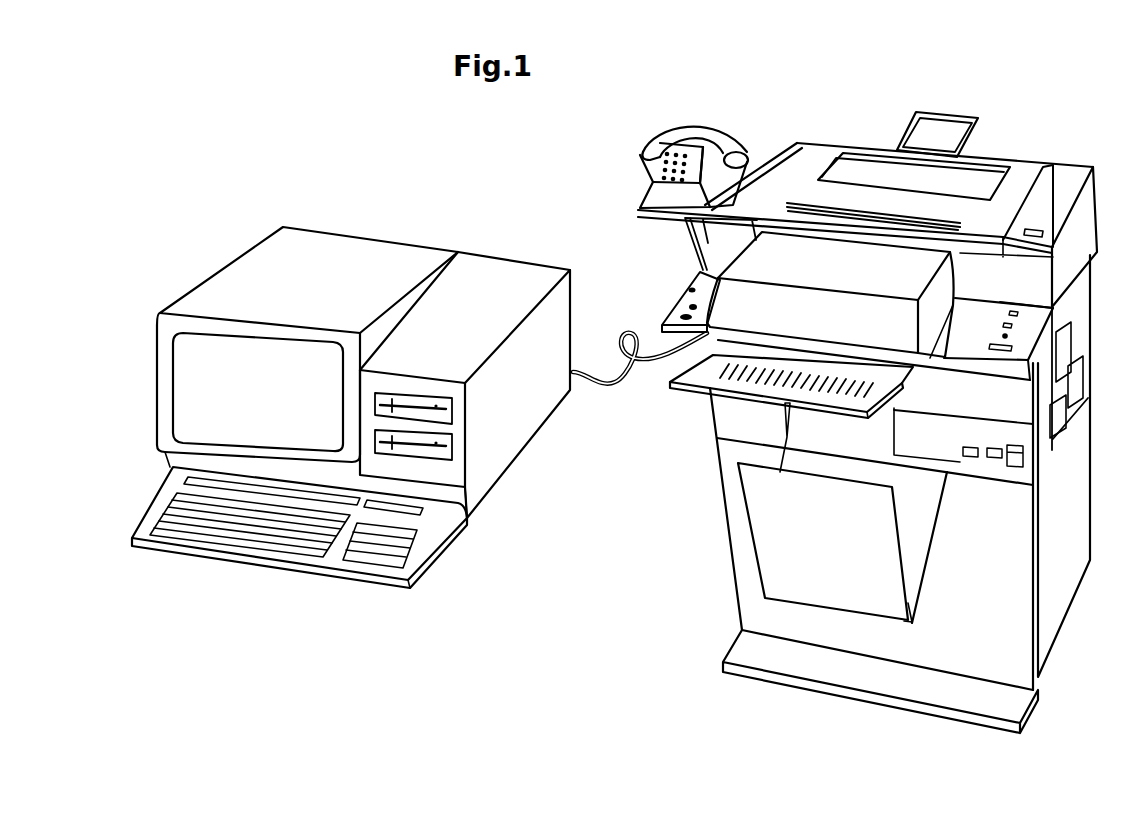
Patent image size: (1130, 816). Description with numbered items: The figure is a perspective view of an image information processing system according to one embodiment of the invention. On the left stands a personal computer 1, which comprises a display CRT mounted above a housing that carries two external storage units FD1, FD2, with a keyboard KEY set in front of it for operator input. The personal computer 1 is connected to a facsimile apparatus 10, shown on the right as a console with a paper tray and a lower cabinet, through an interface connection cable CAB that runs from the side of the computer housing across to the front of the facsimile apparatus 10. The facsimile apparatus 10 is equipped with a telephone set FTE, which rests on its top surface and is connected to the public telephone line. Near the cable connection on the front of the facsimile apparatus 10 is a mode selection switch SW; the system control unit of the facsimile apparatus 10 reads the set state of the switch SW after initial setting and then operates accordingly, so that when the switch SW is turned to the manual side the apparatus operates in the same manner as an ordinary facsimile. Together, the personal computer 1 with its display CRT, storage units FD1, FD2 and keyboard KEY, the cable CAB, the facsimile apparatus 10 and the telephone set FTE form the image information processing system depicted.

The personal computer 1 is at (208, 283).
The display CRT is at (163, 403).
The external storage unit FD1 is at (418, 393).
The external storage unit FD2 is at (450, 433).
The keyboard KEY is at (282, 543).
The interface connection cable CAB is at (623, 384).
The telephone set FTE is at (723, 130).
The mode selection switch SW is at (688, 303).
The facsimile apparatus 10 is at (818, 152).